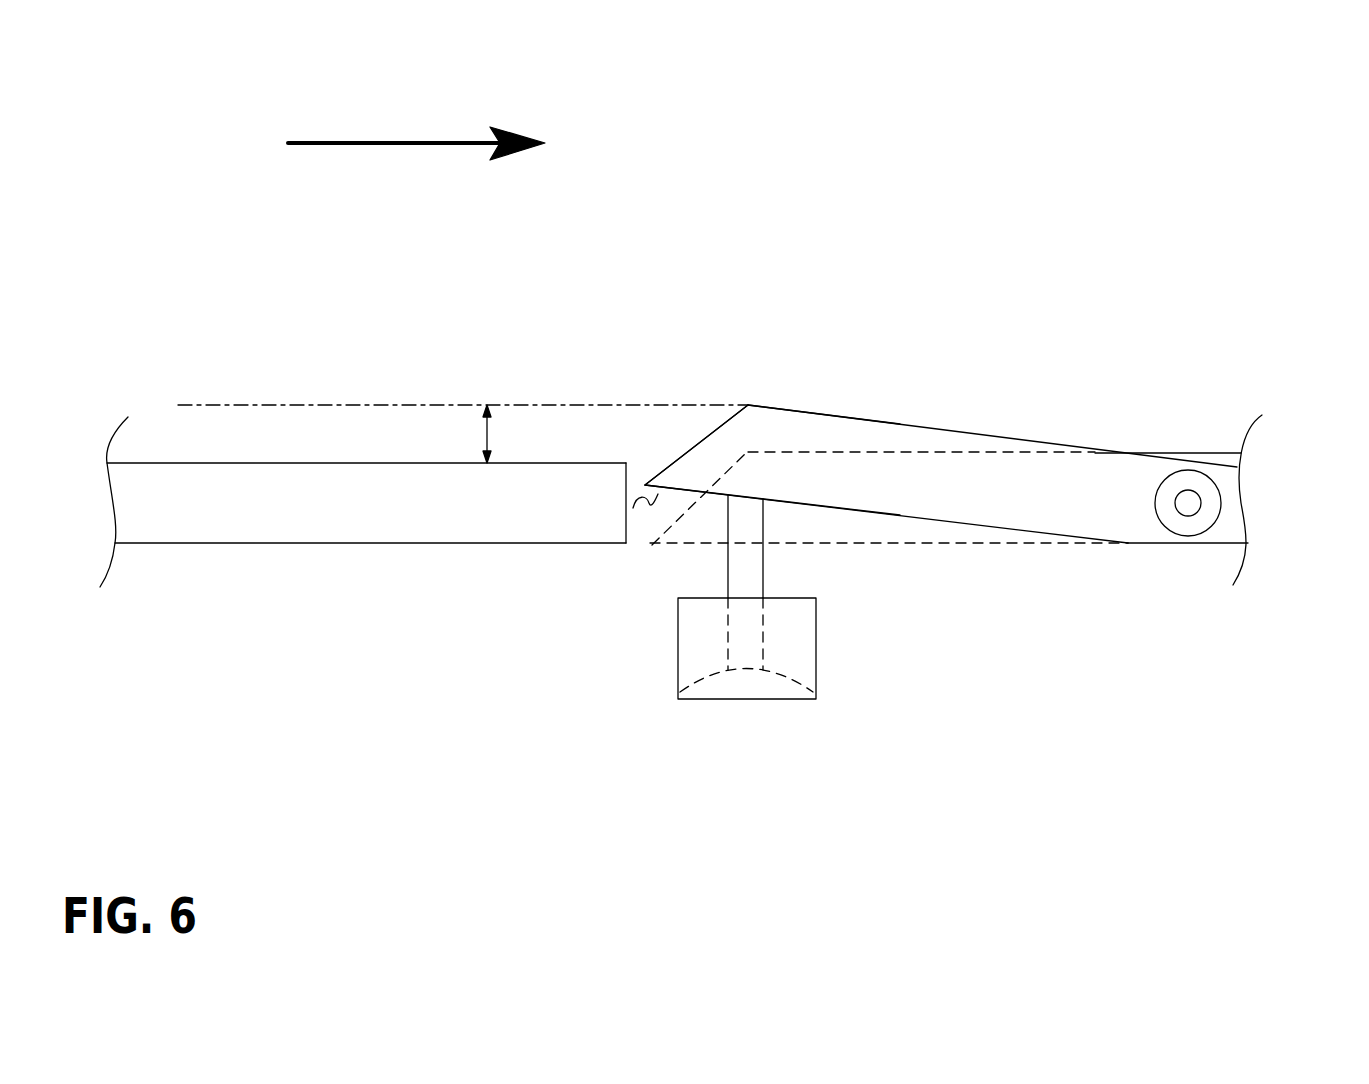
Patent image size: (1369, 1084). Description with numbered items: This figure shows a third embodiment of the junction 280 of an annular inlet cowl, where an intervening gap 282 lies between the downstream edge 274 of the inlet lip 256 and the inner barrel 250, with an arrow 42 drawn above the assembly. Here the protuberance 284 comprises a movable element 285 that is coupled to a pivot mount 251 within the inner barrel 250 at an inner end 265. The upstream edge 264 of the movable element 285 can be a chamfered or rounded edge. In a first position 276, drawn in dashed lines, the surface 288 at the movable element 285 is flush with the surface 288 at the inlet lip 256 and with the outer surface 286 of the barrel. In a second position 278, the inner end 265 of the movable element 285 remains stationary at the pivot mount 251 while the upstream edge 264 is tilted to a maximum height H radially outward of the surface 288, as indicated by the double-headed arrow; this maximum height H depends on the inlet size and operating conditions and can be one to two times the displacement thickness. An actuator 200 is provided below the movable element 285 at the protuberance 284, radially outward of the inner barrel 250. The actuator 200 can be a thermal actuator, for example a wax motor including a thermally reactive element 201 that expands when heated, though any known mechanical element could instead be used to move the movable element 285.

The direction of travel 42 is at (417, 142).
The actuator 200 is at (708, 653).
The thermally reactive element 201 is at (800, 682).
The inner barrel 250 is at (952, 478).
The pivot mount 251 is at (1185, 508).
The inlet lip 256 is at (363, 523).
The upstream edge 264 is at (695, 447).
The inner end 265 is at (1228, 498).
The downstream edge 274 is at (632, 487).
The first position 276 is at (1020, 453).
The second position 278 is at (803, 412).
The junction 280 is at (675, 412).
The intervening gap 282 is at (650, 510).
The protuberance 284 is at (720, 452).
The movable element 285 is at (840, 399).
The outer surface 286 is at (878, 513).
The surface 288 is at (372, 463).
The maximum height H is at (488, 435).